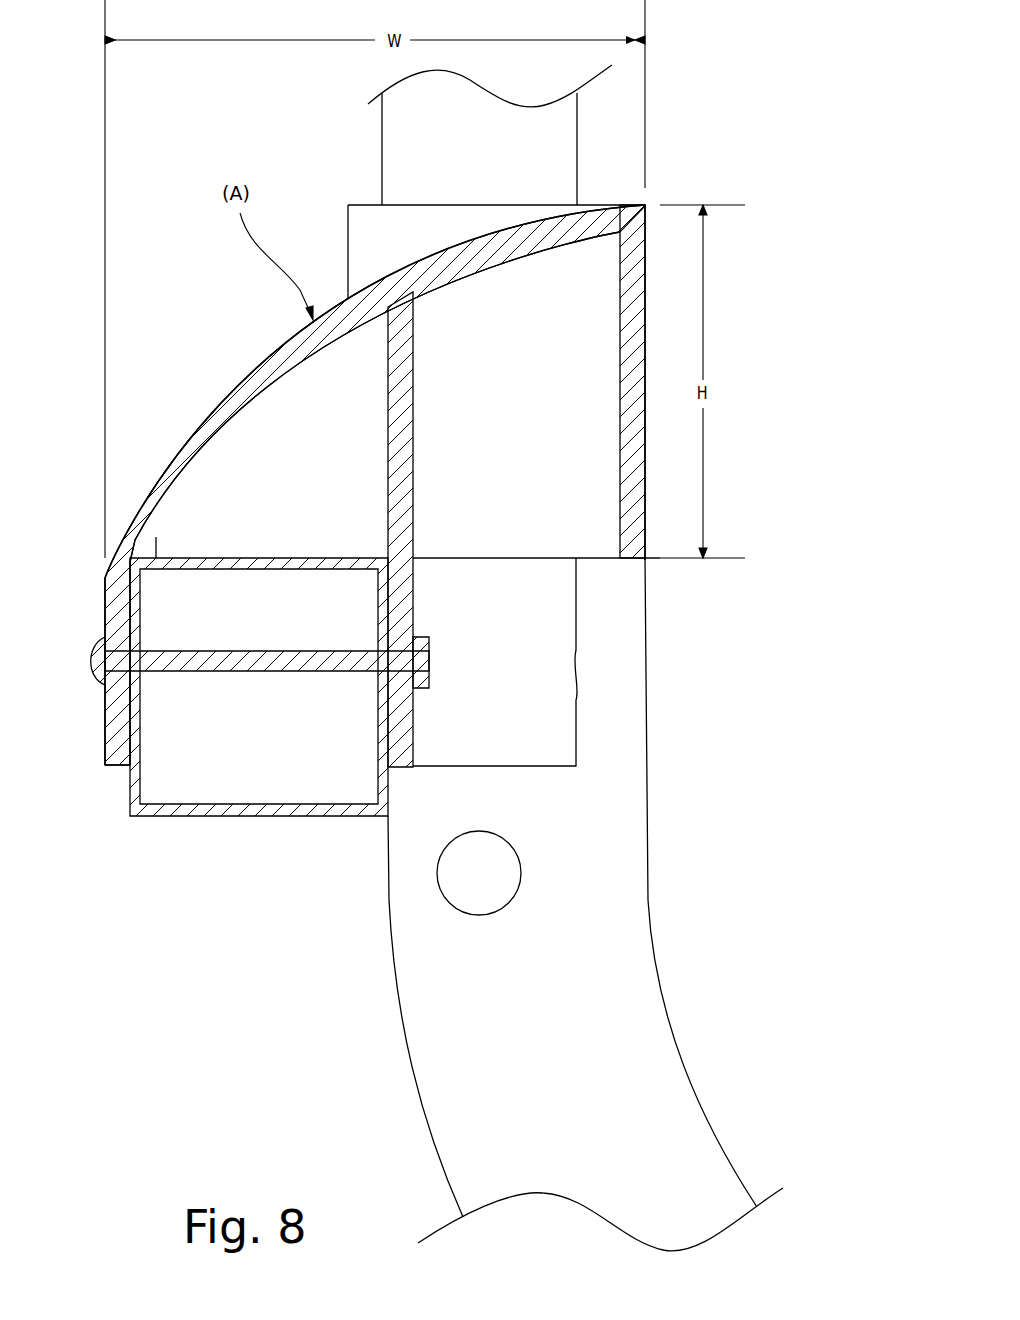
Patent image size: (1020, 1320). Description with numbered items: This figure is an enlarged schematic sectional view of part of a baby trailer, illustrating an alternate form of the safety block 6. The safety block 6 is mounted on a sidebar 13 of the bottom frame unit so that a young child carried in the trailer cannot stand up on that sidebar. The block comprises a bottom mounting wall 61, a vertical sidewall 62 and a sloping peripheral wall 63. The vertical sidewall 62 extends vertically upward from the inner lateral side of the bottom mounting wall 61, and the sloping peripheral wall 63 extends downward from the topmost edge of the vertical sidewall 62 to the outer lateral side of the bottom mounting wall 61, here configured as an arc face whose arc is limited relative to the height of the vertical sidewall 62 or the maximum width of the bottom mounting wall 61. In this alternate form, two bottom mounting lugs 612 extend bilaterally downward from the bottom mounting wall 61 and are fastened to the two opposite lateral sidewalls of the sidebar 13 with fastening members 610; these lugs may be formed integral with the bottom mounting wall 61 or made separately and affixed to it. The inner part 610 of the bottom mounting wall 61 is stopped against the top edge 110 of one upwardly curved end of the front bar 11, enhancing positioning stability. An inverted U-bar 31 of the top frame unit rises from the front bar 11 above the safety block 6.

The inverted U-bar 31 is at (577, 137).
The safety block 6 is at (218, 302).
The vertical sidewall 62 is at (645, 320).
The sloping peripheral wall 63 is at (236, 396).
The bottom mounting wall 61 is at (258, 558).
The bottom mounting lug 612 is at (413, 713).
The sidebar 13 is at (130, 783).
The top edge 110 is at (590, 558).
The fastening member 610 is at (613, 558).
The front bar 11 is at (670, 1045).